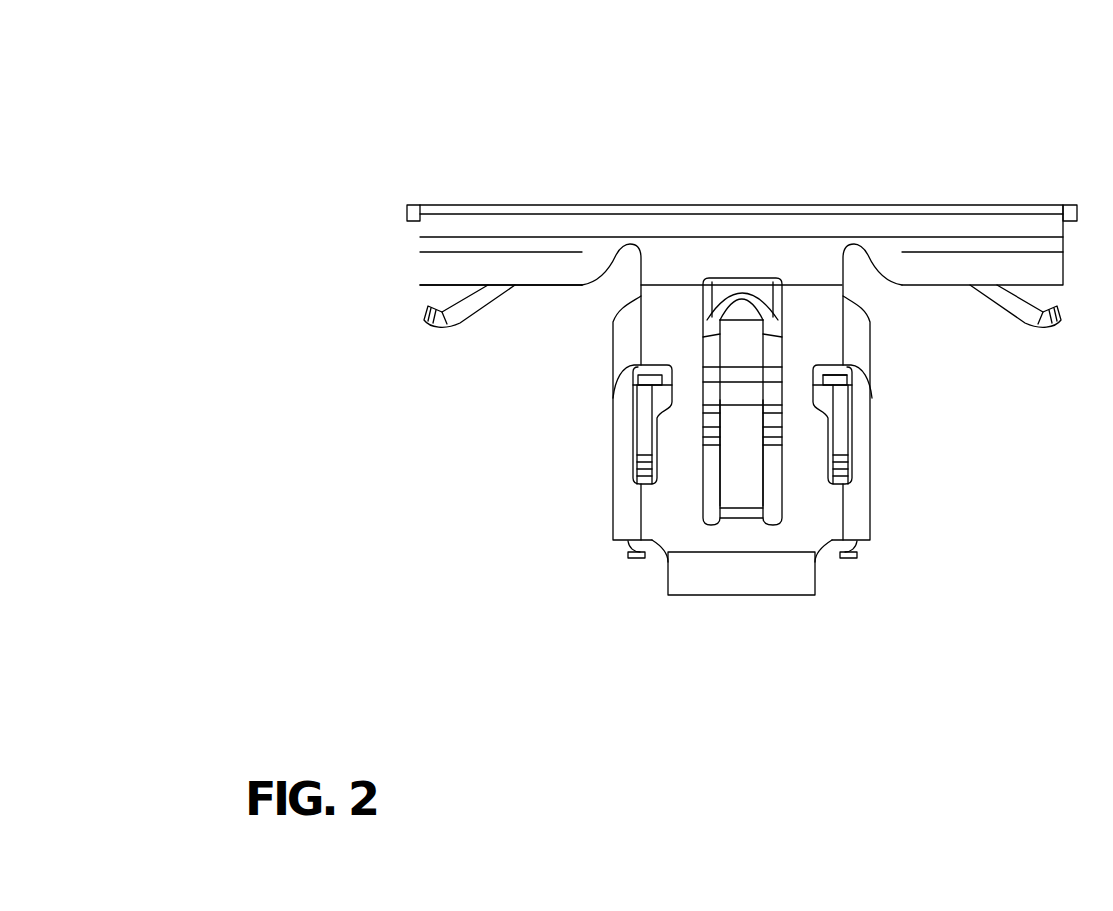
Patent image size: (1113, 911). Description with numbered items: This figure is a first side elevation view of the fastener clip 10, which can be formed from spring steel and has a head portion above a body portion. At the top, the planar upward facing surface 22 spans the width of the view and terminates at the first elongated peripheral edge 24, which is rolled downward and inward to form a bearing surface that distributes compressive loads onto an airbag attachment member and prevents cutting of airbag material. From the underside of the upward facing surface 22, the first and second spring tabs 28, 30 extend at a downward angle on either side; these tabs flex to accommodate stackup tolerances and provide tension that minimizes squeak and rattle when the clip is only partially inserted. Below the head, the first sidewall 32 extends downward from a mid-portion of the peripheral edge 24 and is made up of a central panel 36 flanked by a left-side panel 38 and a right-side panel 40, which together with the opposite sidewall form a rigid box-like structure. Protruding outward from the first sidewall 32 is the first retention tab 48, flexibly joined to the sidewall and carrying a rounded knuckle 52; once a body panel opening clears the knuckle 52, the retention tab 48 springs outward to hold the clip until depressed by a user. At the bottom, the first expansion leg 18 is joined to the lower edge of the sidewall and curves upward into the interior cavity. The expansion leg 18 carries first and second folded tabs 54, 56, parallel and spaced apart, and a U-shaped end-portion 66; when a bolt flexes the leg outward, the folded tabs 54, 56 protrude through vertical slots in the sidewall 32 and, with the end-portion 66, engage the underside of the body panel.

The fastener clip 10 is at (951, 111).
The first expansion leg 18 is at (768, 576).
The upward facing surface 22 is at (552, 205).
The first elongated peripheral edge 24 is at (1012, 230).
The first spring tab 28 is at (463, 328).
The second spring tab 30 is at (1017, 326).
The first sidewall 32 is at (662, 334).
The central panel 36 is at (821, 521).
The left-side panel 38 is at (612, 522).
The right-side panel 40 is at (871, 516).
The first retention tab 48 is at (735, 470).
The rounded knuckle 52 is at (748, 397).
The first folded tab 54 is at (645, 413).
The second folded tab 56 is at (840, 413).
The U-shaped end-portion 66 is at (837, 372).